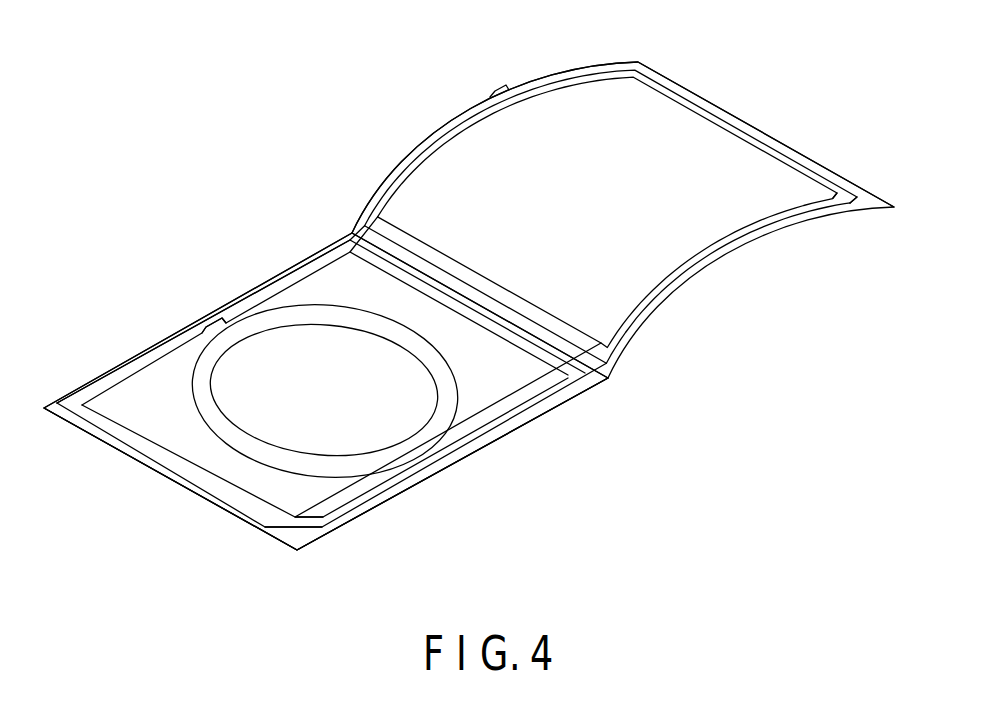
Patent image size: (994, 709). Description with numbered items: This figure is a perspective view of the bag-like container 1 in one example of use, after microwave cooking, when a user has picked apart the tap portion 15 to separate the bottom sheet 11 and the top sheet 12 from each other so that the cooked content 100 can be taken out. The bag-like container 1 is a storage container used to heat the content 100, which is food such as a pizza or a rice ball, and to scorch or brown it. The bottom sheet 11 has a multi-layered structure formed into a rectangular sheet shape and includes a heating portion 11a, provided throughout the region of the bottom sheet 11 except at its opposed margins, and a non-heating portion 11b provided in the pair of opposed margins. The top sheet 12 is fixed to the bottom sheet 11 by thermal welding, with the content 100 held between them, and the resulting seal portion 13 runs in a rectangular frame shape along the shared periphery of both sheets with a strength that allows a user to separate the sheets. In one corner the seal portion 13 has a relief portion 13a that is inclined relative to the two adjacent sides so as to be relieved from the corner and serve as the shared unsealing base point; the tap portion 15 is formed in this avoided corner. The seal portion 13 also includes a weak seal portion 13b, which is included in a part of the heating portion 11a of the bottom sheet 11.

The bag-like container 1 is at (724, 358).
The bottom sheet 11 is at (420, 530).
The heating portion 11a is at (146, 345).
The non-heating portion 11b is at (345, 232).
The top sheet 12 is at (792, 97).
The seal portion 13 is at (735, 241).
The relief portion 13a is at (853, 191).
The weak seal portion 13b is at (496, 90).
The tap portion 15 is at (871, 201).
The content 100 is at (232, 442).